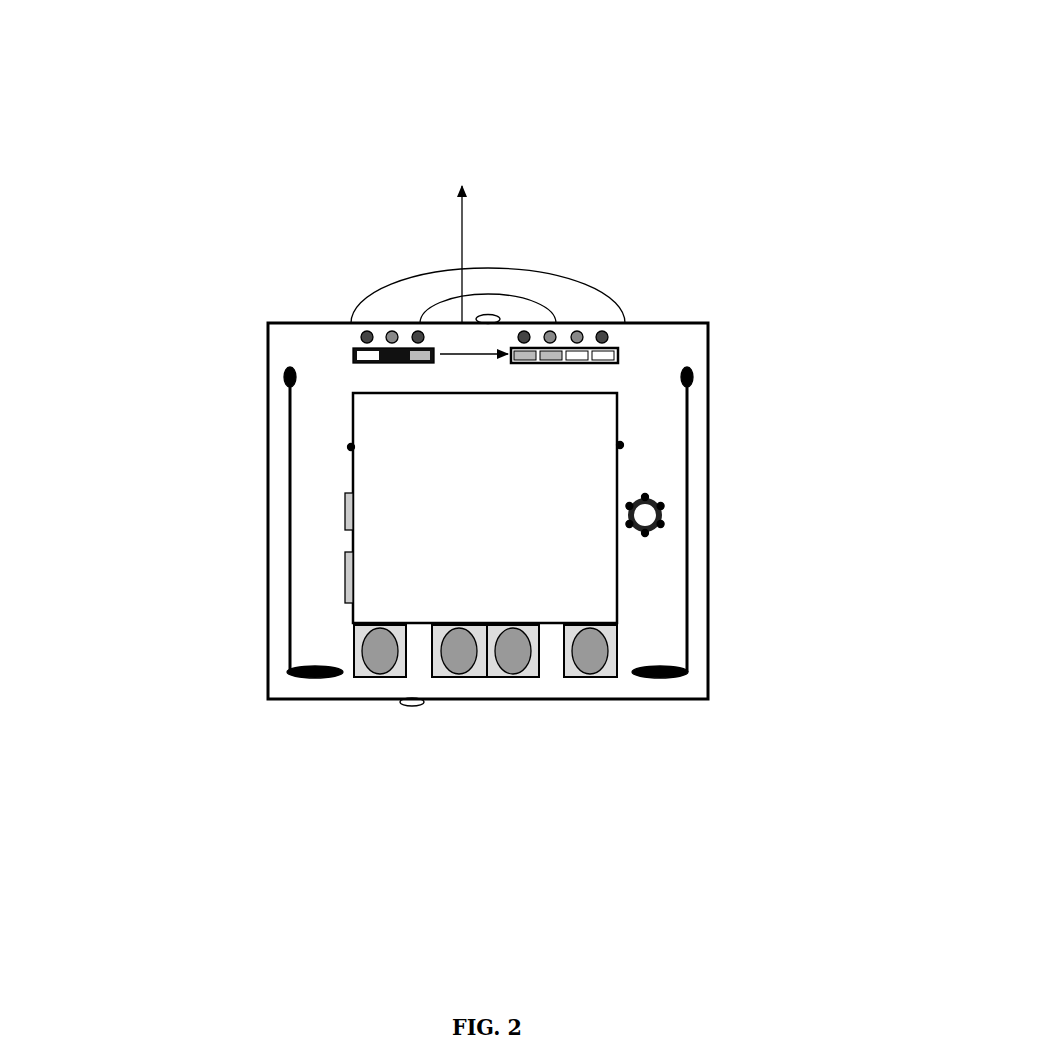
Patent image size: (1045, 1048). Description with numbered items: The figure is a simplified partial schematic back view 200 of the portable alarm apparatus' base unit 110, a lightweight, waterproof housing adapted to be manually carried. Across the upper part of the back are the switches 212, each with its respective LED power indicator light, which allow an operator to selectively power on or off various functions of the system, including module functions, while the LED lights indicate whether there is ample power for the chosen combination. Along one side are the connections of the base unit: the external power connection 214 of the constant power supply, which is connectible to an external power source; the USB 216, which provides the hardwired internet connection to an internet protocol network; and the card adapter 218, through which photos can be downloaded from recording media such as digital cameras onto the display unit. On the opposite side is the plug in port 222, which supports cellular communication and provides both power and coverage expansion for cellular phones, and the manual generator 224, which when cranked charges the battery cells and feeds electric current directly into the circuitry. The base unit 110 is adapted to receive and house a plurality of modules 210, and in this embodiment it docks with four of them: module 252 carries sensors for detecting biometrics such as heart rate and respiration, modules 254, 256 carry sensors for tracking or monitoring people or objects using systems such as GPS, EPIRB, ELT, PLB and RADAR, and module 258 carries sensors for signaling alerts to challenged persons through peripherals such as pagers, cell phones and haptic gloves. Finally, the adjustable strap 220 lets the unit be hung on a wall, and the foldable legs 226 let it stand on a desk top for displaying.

The back view of base unit 200 is at (545, 360).
The base unit 110 is at (514, 183).
The adjustable strap 220 is at (620, 301).
The switches 212 is at (349, 353).
The external power connection 214 is at (347, 447).
The USB 216 is at (344, 508).
The card adapter 218 is at (344, 575).
The plug in port 222 is at (626, 445).
The manual generator 224 is at (668, 515).
The foldable legs 226 is at (691, 576).
The modules 210 is at (485, 651).
The module 252 is at (377, 680).
The module 254 is at (460, 680).
The module 256 is at (515, 680).
The module 258 is at (590, 680).